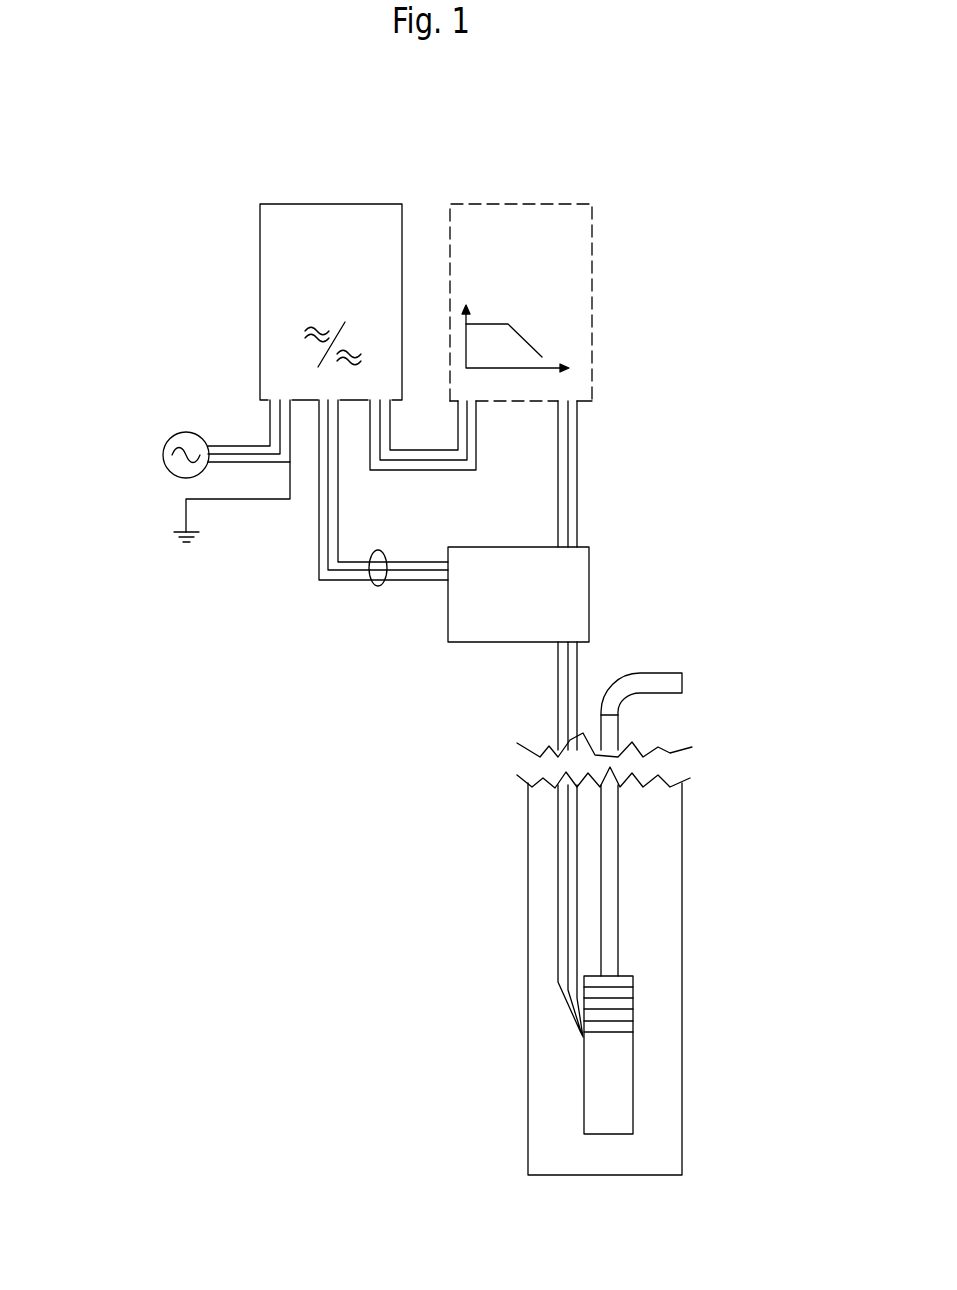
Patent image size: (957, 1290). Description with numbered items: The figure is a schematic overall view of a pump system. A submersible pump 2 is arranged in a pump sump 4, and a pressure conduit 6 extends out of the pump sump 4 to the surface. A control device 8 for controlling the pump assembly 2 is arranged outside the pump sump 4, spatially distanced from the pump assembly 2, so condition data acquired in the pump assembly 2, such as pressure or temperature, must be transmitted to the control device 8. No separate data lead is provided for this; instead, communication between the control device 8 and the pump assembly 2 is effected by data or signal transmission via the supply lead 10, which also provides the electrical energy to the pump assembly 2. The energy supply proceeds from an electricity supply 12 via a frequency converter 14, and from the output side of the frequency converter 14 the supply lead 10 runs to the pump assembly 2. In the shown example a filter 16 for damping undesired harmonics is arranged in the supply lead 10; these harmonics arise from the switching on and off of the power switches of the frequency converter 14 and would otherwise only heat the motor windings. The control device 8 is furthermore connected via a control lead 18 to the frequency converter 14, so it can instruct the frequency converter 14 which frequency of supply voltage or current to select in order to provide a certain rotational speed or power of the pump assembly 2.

The submersible pump 2 is at (597, 1075).
The pump sump 4 is at (655, 995).
The pressure conduit 6 is at (686, 680).
The control device 8 is at (473, 633).
The supply lead 10 is at (487, 443).
The electricity supply 12 is at (175, 467).
The frequency converter 14 is at (300, 220).
The filter 16 is at (573, 252).
The control lead 18 is at (373, 587).